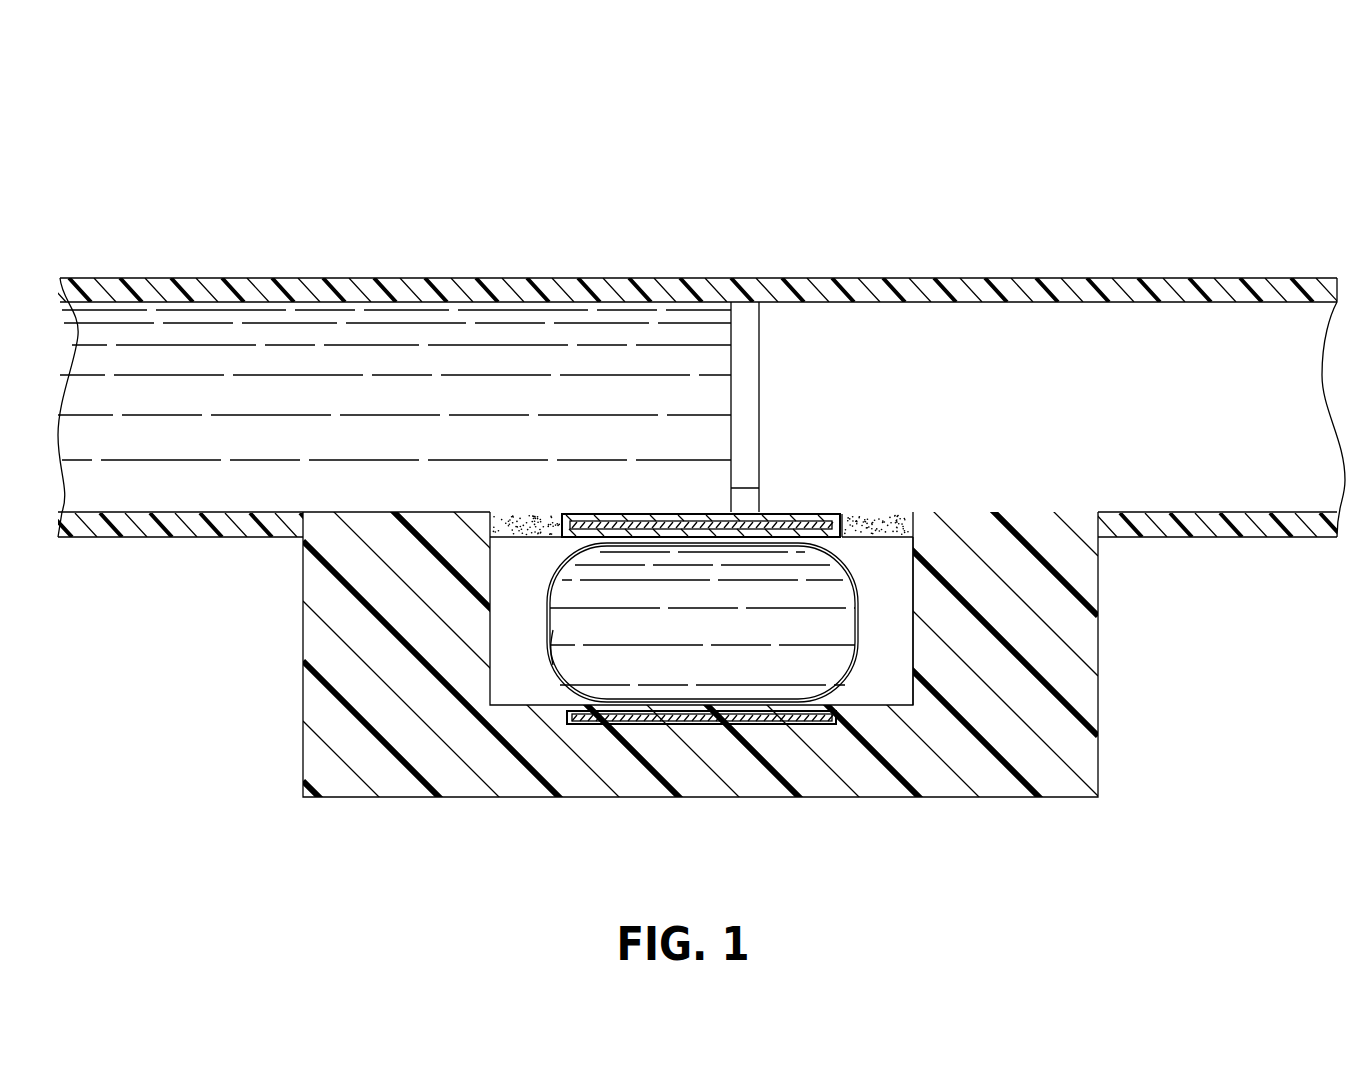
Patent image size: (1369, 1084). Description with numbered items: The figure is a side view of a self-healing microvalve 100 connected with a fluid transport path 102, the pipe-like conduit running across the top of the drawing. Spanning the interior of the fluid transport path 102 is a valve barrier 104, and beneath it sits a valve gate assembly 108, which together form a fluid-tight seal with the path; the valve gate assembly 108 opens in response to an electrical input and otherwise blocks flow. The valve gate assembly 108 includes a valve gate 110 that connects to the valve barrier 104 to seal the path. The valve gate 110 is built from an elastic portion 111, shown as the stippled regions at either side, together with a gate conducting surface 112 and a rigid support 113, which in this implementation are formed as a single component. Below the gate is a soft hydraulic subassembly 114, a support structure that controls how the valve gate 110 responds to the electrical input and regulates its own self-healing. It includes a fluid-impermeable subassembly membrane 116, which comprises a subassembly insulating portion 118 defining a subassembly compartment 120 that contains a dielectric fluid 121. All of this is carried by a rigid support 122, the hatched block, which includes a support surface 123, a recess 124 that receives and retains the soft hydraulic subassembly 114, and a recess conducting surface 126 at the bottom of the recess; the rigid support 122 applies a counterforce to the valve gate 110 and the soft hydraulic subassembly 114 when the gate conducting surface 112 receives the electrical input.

The self-healing microvalve 100 is at (1236, 104).
The fluid transport path 102 is at (87, 278).
The valve barrier 104 is at (745, 318).
The valve gate assembly 108 is at (880, 558).
The valve gate 110 is at (688, 502).
The elastic portion 111 is at (513, 512).
The gate conducting surface 112 is at (640, 512).
The rigid support 113 is at (595, 512).
The soft hydraulic subassembly 114 is at (858, 625).
The subassembly membrane 116 is at (840, 673).
The subassembly insulating portion 118 is at (818, 708).
The subassembly compartment 120 is at (557, 652).
The dielectric fluid 121 is at (608, 655).
The rigid support 122 is at (318, 665).
The support surface 123 is at (358, 512).
The recess 124 is at (900, 692).
The recess conducting surface 126 is at (648, 716).